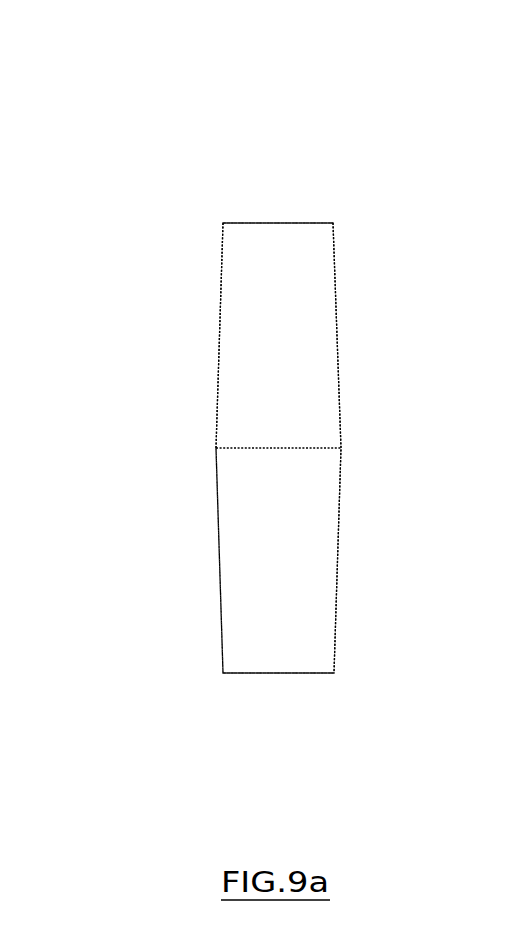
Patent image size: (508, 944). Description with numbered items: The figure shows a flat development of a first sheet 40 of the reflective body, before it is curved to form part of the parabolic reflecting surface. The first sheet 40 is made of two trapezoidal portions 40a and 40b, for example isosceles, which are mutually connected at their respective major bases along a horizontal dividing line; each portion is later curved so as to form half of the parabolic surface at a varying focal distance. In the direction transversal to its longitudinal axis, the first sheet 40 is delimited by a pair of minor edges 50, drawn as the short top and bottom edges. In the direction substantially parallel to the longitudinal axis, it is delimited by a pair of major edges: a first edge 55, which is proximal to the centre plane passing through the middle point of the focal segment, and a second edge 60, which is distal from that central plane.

The first sheet 40 is at (286, 446).
The trapezoidal portion 40a is at (290, 357).
The trapezoidal portion 40b is at (305, 582).
The minor edge 50 is at (281, 222).
The first edge 55 is at (152, 448).
The second edge 60 is at (412, 448).